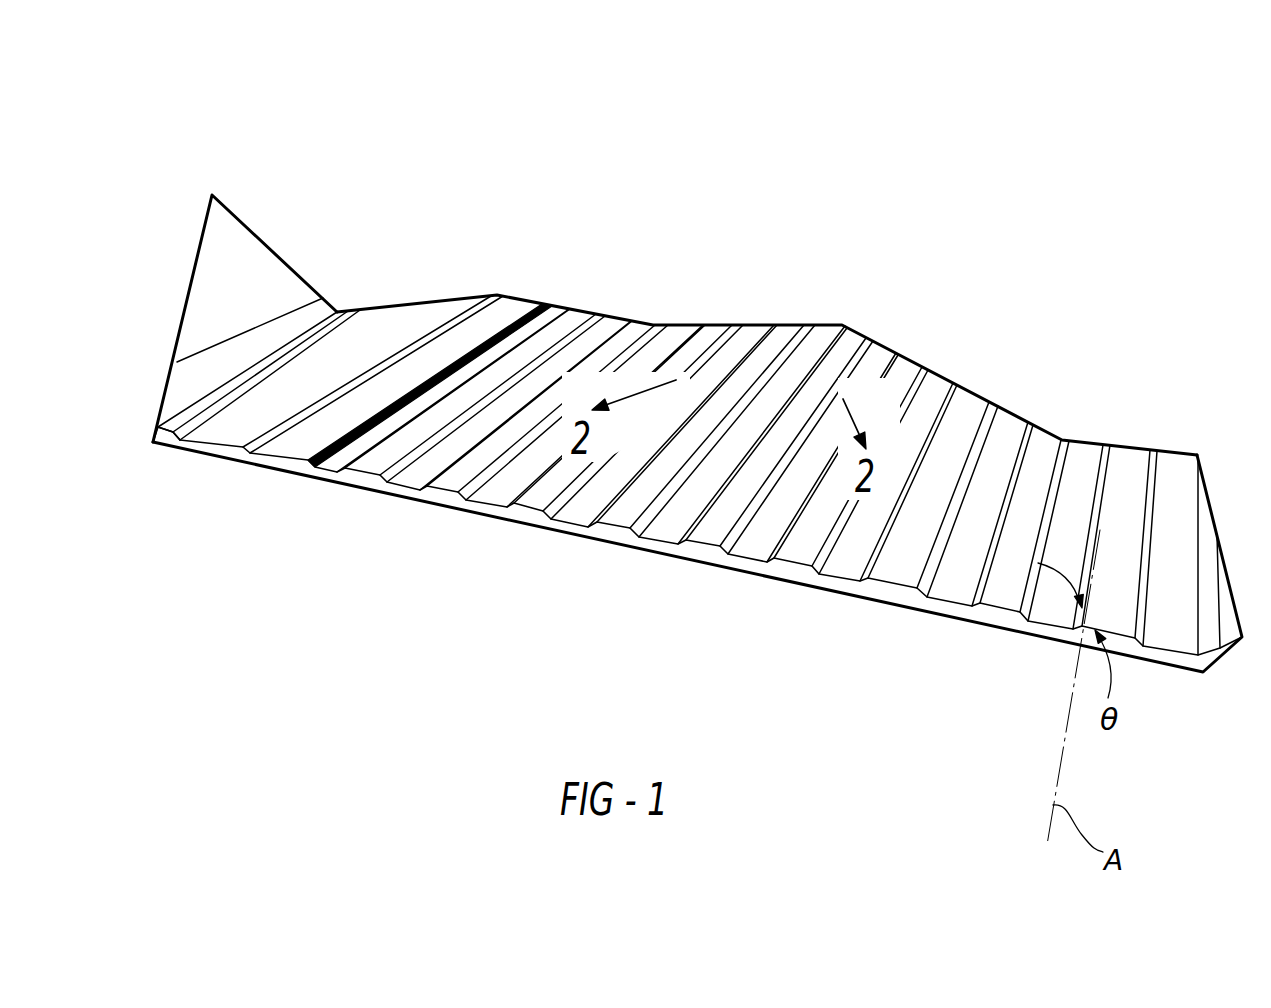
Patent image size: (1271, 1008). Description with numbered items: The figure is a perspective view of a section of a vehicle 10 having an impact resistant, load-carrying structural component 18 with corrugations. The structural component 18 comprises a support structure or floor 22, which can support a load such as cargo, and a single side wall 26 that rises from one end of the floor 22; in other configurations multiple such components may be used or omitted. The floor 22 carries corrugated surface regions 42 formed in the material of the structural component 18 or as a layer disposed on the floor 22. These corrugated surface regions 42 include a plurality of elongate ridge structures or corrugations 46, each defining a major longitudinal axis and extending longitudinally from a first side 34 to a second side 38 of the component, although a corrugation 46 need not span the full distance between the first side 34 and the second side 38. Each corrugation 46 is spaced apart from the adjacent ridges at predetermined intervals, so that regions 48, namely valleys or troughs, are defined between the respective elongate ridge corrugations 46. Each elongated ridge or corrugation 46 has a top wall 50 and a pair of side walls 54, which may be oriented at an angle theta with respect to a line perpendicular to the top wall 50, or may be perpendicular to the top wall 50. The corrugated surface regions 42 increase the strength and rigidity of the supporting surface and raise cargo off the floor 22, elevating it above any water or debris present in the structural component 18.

The vehicle 10 is at (1003, 268).
The structural component 18 is at (487, 306).
The floor 22 is at (372, 373).
The side wall 26 is at (237, 258).
The first side 34 is at (782, 326).
The second side 38 is at (195, 447).
The corrugated surface regions 42 is at (390, 456).
The corrugations 46 is at (622, 513).
The regions 48 is at (663, 521).
The top wall 50 is at (893, 585).
The side walls 54 is at (1012, 625).